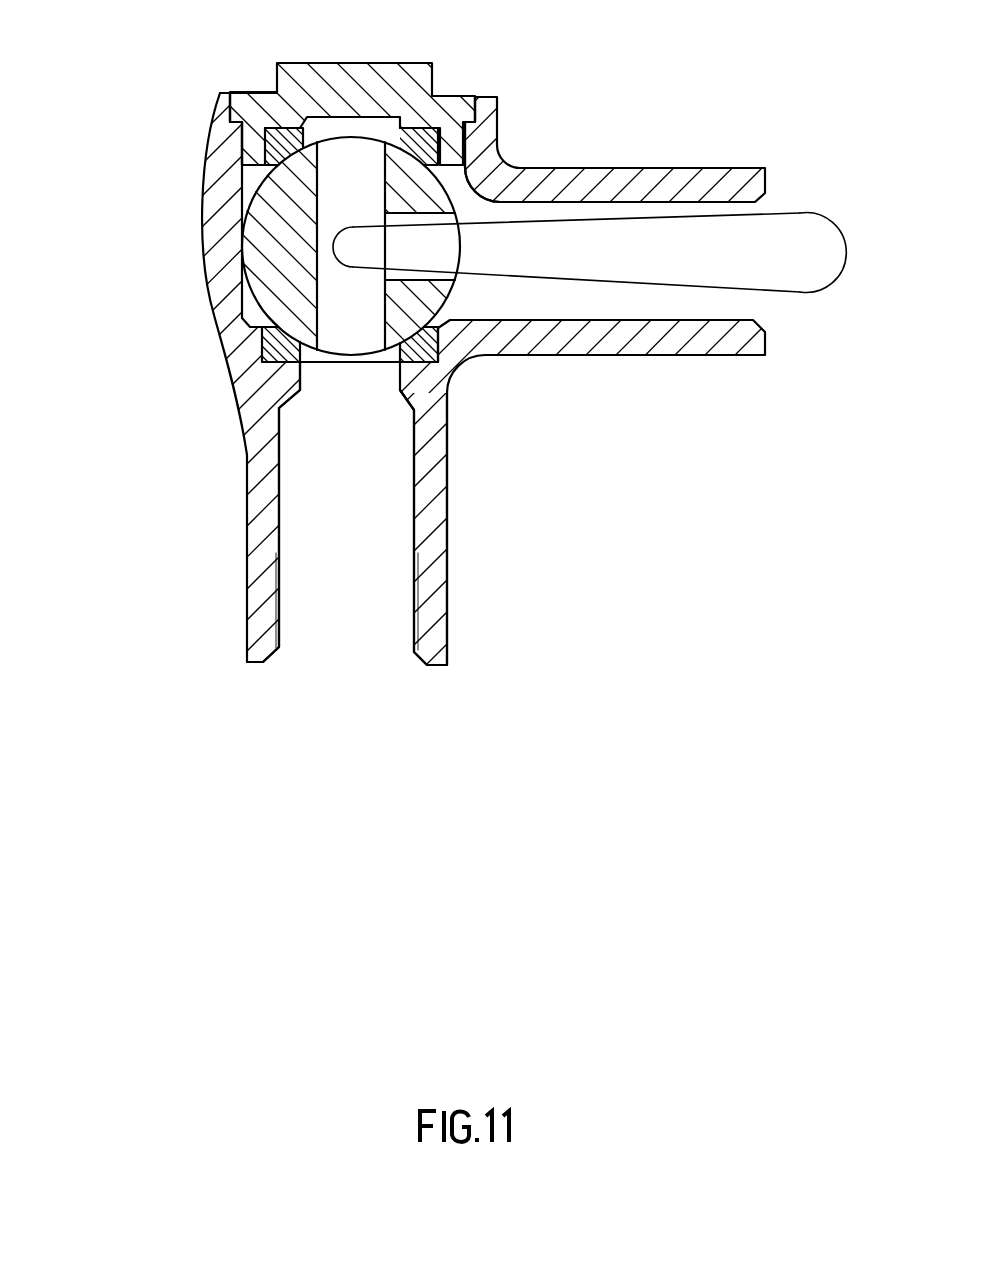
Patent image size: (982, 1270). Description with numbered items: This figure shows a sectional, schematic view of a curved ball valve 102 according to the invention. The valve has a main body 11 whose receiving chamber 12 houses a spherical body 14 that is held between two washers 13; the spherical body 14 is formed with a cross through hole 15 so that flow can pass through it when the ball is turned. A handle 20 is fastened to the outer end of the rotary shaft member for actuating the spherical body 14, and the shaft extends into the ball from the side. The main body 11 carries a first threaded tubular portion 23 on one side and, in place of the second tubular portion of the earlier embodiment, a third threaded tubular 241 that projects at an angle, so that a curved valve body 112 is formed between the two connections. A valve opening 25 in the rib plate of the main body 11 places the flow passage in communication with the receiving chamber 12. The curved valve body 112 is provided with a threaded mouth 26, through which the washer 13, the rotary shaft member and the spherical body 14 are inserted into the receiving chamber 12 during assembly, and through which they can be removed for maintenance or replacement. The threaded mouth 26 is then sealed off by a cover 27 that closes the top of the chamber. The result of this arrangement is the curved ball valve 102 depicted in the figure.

The curved ball valve 102 is at (150, 713).
The curved valve body 112 is at (200, 203).
The main body 11 is at (579, 337).
The receiving chamber 12 is at (462, 197).
The washer 13 is at (275, 123).
The spherical body 14 is at (243, 242).
The cross through hole 15 is at (348, 157).
The handle 20 is at (826, 215).
The first threaded tubular portion 23 is at (684, 200).
The valve opening 25 is at (275, 390).
The threaded mouth 26 is at (236, 130).
The cover 27 is at (392, 84).
The third threaded tubular 241 is at (418, 595).